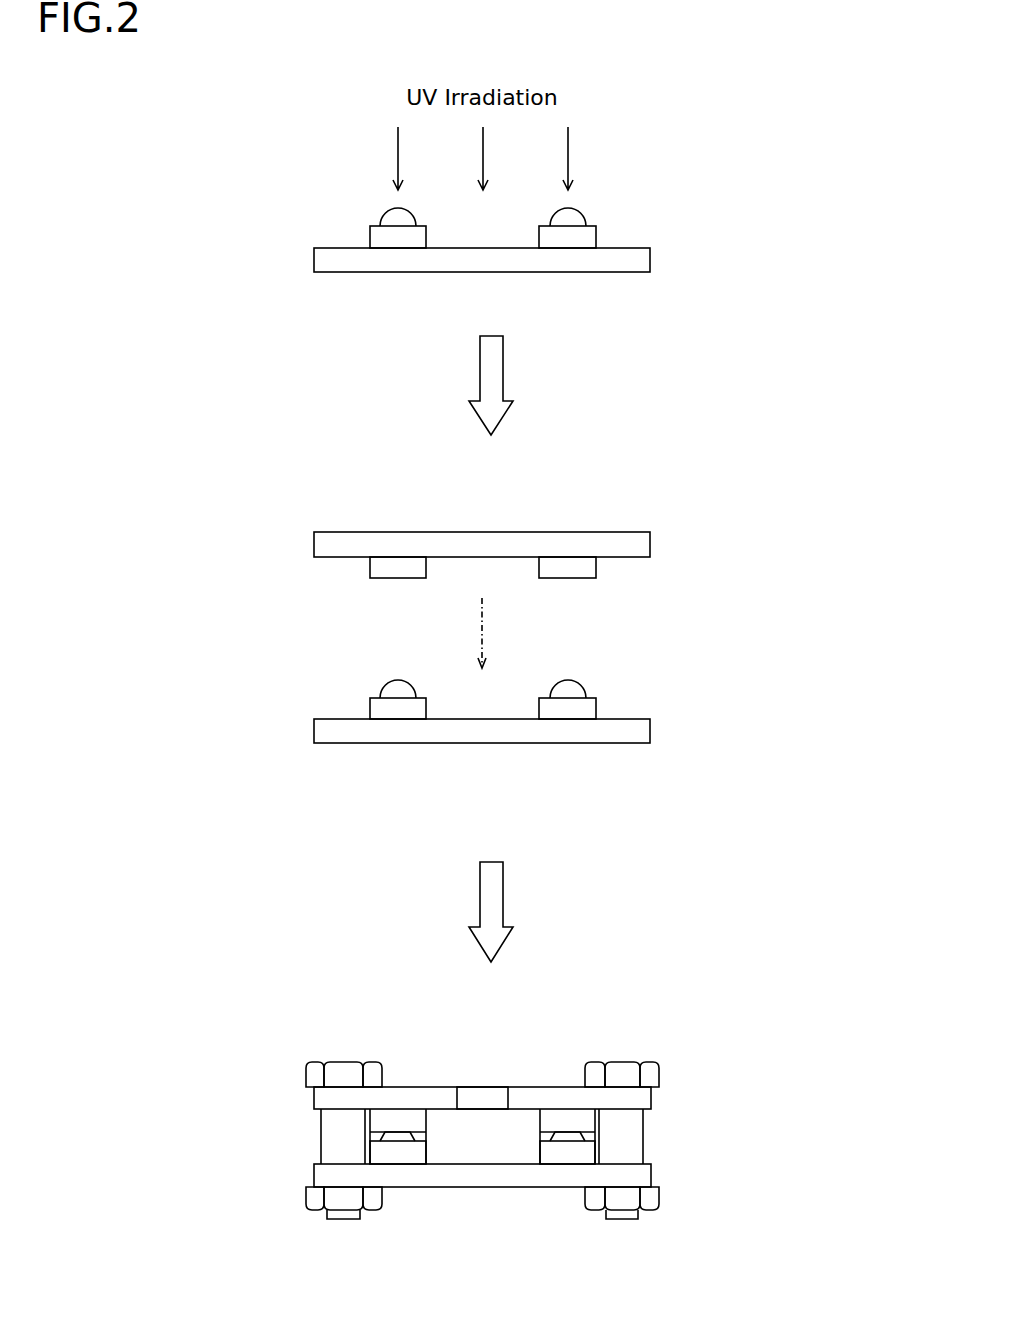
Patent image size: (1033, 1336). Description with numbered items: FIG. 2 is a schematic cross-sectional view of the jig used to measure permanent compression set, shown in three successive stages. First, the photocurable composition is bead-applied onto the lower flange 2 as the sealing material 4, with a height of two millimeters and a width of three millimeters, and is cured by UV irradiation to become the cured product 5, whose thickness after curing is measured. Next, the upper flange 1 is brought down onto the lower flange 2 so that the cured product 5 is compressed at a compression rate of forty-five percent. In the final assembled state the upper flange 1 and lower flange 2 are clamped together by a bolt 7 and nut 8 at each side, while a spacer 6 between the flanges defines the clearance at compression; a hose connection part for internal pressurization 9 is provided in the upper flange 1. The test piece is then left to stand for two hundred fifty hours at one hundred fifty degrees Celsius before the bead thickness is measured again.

The upper flange 1 is at (620, 532).
The lower flange 2 is at (650, 255).
The sealing material 4 is at (575, 221).
The cured product 5 is at (575, 692).
The spacer 6 is at (651, 1130).
The bolt 7 is at (659, 1078).
The nut 8 is at (659, 1195).
The hose connection part for internal pressurization 9 is at (482, 1085).